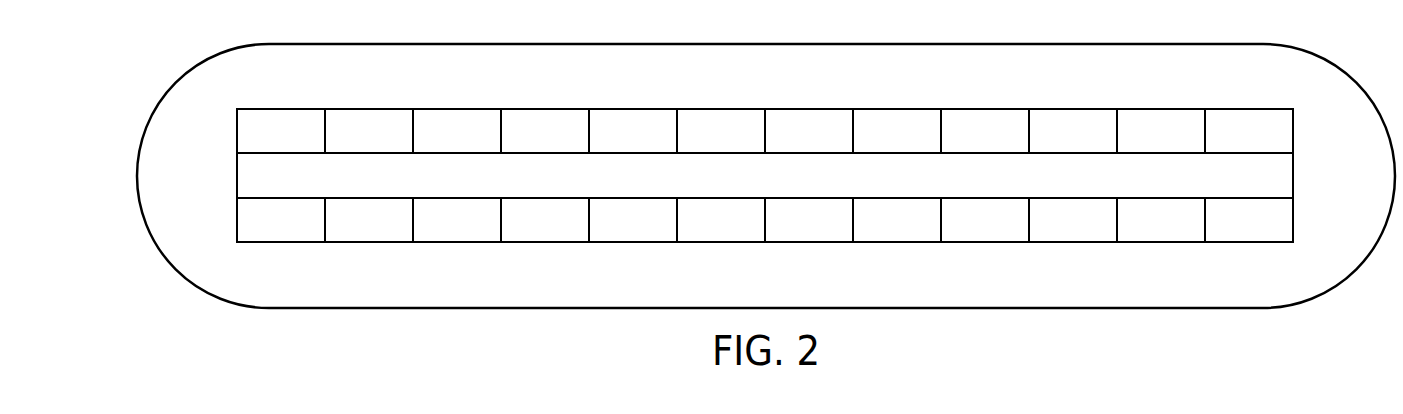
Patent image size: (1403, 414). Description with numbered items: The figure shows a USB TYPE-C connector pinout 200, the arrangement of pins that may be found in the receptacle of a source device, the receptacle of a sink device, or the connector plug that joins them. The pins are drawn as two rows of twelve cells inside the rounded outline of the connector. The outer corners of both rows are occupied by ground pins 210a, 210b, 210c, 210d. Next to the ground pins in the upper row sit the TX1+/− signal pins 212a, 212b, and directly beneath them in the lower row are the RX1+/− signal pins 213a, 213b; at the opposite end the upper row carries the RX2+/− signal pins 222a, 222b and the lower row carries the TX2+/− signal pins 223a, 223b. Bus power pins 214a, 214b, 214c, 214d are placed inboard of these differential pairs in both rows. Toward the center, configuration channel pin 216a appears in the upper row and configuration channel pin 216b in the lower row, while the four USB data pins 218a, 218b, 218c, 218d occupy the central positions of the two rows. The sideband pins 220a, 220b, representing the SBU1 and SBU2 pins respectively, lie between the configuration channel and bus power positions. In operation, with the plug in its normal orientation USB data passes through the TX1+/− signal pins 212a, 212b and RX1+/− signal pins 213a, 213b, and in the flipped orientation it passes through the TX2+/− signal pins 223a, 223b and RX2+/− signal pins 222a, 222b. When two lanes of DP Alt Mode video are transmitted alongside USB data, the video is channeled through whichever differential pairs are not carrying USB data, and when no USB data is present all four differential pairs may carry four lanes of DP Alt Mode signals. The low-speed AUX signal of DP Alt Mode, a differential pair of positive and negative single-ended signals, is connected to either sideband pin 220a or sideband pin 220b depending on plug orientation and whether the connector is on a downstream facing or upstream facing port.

The USB TYPE-C connector pinout 200 is at (112, 115).
The ground pin 210a is at (281, 117).
The TX1+/− signal pin 212a is at (369, 117).
The TX1+/− signal pin 212b is at (457, 117).
The bus power pin 214a is at (545, 117).
The configuration channel pin 216a is at (633, 117).
The USB data pin 218a is at (721, 117).
The USB data pin 218b is at (809, 117).
The sideband pin 220a is at (897, 117).
The bus power pin 214b is at (985, 117).
The RX2+/− signal pin 222a is at (1073, 117).
The RX2+/− signal pin 222b is at (1161, 117).
The ground pin 210b is at (1249, 117).
The ground pin 210c is at (281, 234).
The RX1+/− signal pin 213a is at (369, 234).
The RX1+/− signal pin 213b is at (457, 234).
The bus power pin 214d is at (545, 234).
The sideband pin 220b is at (633, 234).
The USB data pin 218d is at (721, 234).
The USB data pin 218c is at (809, 234).
The configuration channel pin 216b is at (897, 234).
The bus power pin 214c is at (985, 234).
The TX2+/− signal pin 223a is at (1073, 234).
The TX2+/− signal pin 223b is at (1161, 234).
The ground pin 210d is at (1249, 234).